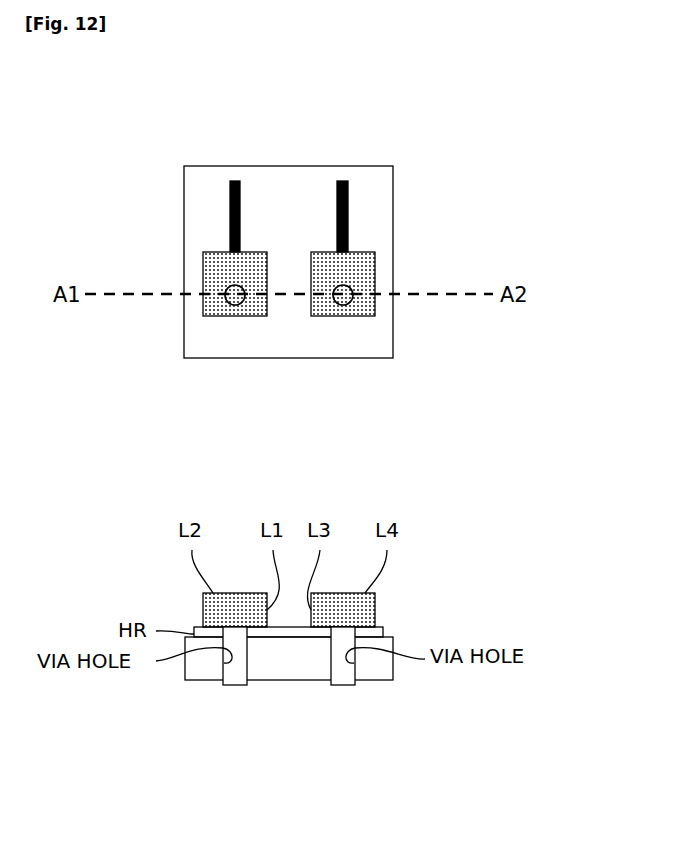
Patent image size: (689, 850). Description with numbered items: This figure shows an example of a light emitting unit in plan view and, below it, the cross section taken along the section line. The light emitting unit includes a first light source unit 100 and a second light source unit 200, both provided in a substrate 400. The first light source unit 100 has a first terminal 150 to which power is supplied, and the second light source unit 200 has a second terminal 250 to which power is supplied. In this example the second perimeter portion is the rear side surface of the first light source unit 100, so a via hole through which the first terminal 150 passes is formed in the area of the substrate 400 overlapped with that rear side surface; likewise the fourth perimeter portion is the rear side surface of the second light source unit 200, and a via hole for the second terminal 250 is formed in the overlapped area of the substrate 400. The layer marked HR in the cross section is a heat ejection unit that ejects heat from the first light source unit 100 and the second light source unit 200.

The first light source unit 100 is at (203, 265).
The first terminal 150 is at (230, 199).
The second light source unit 200 is at (375, 268).
The second terminal 250 is at (348, 203).
The substrate 400 is at (364, 166).